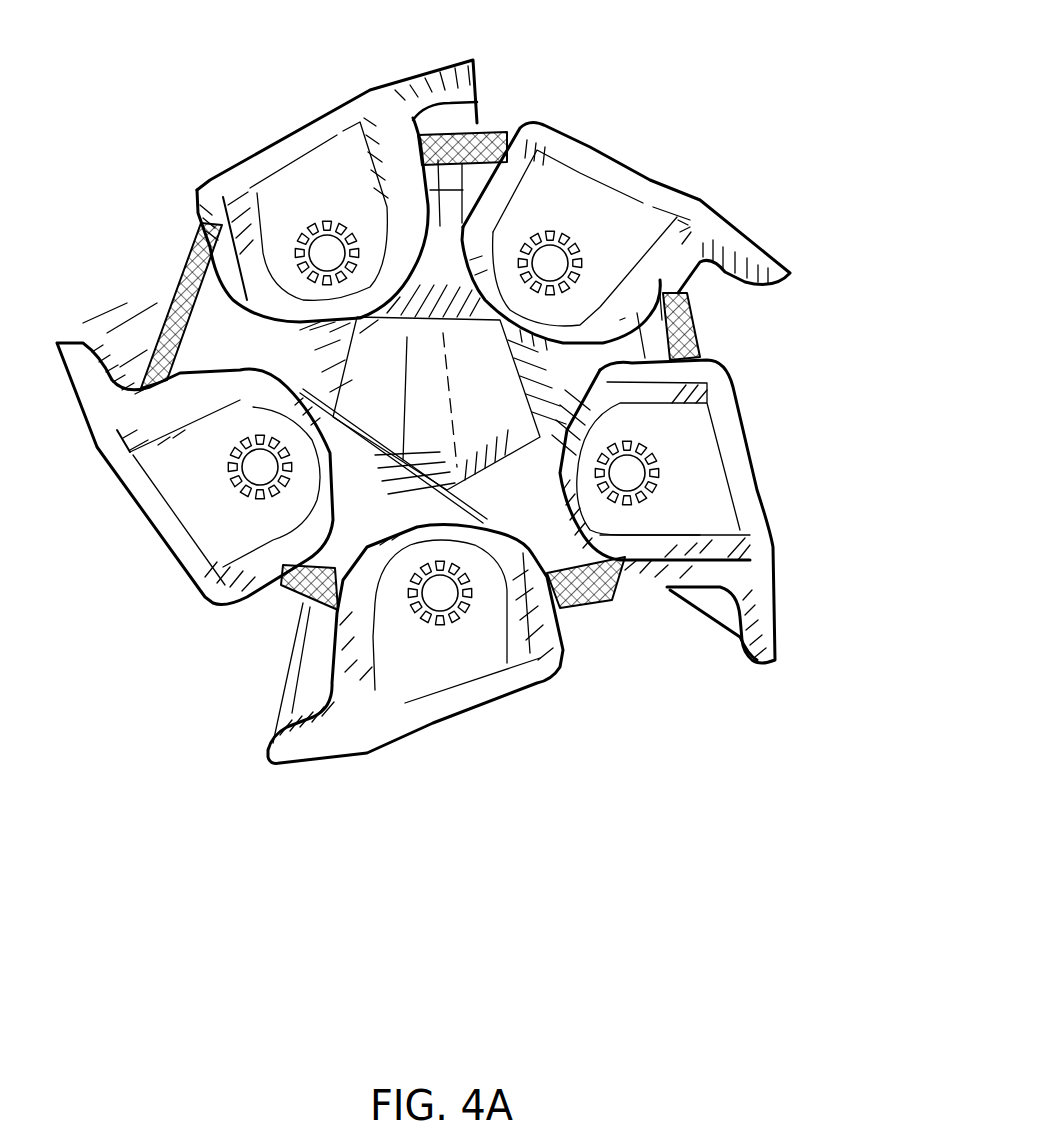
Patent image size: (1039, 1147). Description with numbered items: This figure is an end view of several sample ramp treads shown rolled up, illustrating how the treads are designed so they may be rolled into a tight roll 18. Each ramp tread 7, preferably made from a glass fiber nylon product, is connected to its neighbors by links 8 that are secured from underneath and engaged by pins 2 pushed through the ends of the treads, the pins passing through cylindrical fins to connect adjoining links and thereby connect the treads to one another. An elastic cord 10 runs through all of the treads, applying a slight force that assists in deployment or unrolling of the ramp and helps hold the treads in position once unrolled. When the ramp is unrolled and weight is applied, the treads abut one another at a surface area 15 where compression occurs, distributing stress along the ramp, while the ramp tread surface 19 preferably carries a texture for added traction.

The pins 2 is at (443, 596).
The ramp tread 7 is at (460, 433).
The link 8 is at (450, 230).
The elastic cord 10 is at (690, 327).
The surface area of compression 15 is at (337, 687).
The treads rolled into a tight roll 18 is at (667, 537).
The ramp tread surface 19 is at (757, 489).